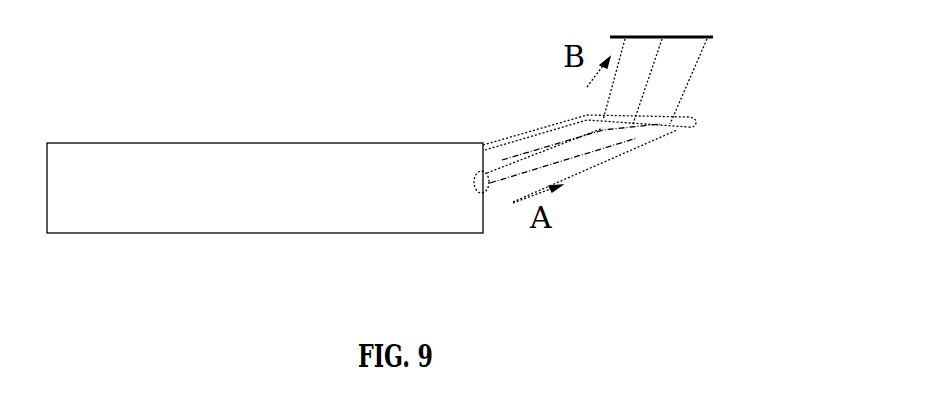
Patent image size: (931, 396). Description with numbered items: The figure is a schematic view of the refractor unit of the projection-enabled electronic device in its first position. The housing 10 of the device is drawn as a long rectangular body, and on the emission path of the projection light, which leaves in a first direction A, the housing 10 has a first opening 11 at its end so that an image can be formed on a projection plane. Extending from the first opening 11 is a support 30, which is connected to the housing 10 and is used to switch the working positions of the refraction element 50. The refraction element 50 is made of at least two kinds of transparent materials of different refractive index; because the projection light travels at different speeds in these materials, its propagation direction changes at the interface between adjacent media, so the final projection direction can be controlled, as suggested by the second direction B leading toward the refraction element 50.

The housing 10 is at (190, 235).
The first opening 11 is at (478, 191).
The support 30 is at (520, 132).
The refraction element 50 is at (137, 127).